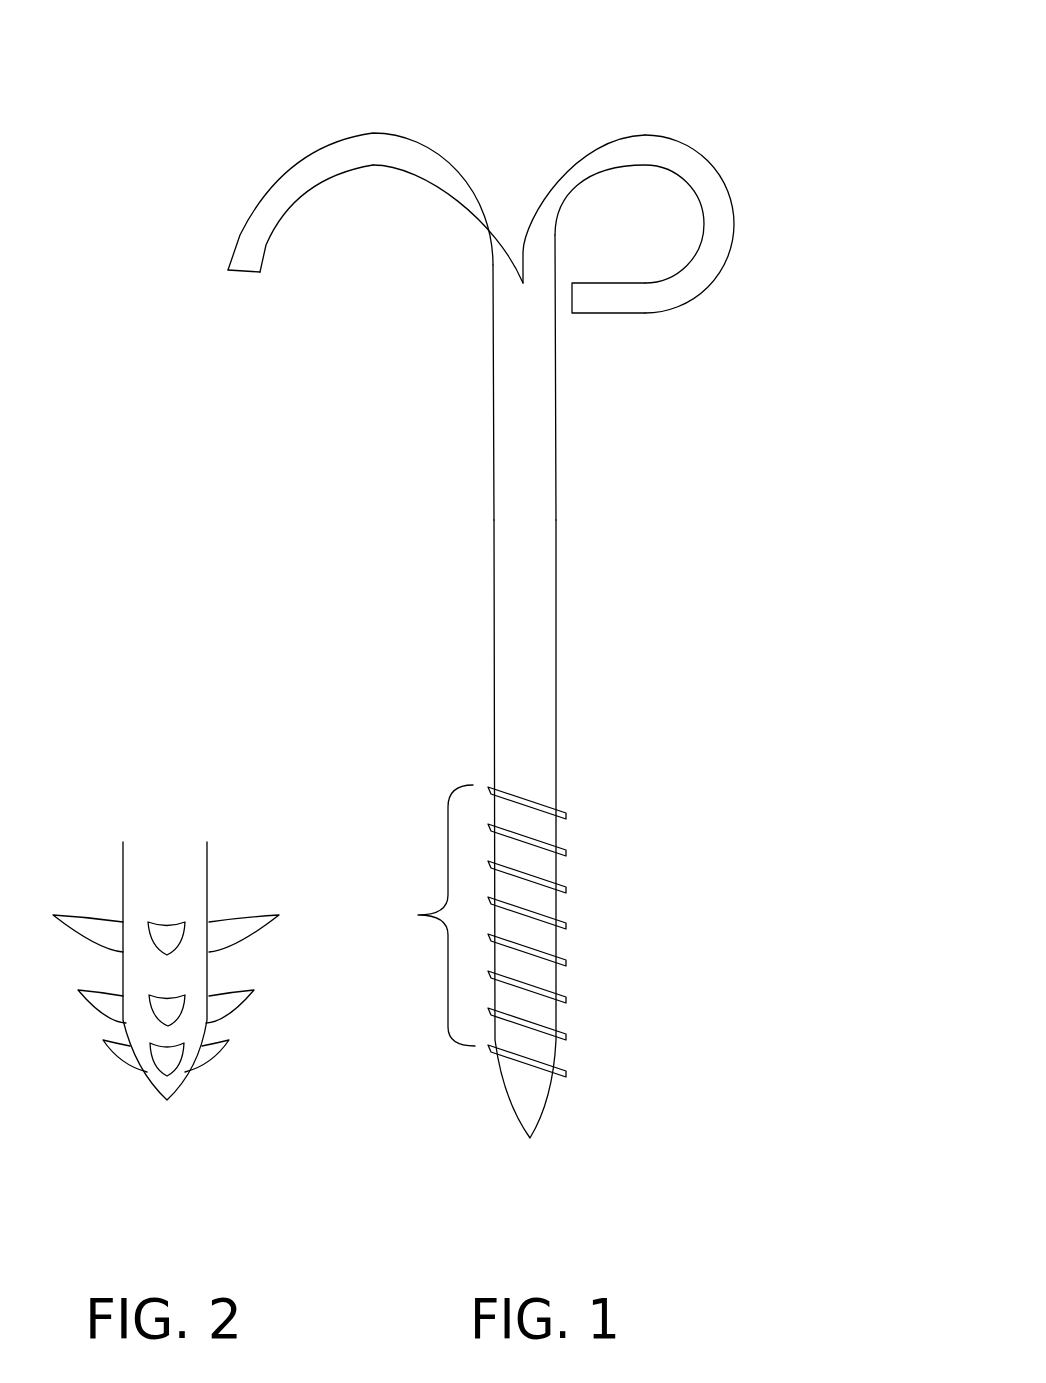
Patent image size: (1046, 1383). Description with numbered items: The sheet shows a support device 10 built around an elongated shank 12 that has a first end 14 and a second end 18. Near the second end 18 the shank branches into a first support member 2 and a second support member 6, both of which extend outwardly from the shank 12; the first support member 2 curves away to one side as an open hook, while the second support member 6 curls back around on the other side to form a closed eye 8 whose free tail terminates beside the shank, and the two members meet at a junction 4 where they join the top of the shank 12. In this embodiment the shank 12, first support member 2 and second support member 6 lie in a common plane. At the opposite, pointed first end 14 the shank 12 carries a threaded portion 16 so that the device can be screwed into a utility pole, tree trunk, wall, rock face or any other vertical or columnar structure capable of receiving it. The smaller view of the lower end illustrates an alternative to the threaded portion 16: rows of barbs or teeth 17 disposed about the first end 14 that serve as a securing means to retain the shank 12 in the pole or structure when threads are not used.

In FIG. 1, the first support member 2 is at (248, 203).
In FIG. 1, the junction of hook portions 4 is at (521, 245).
In FIG. 1, the second support member 6 is at (637, 318).
In FIG. 1, the eye loop of second hook portion 8 is at (638, 237).
In FIG. 1, the support device 10 is at (687, 116).
In FIG. 1, the shank 12 is at (556, 550).
In FIG. 1, the first end 14 is at (563, 945).
In FIG. 1, the threaded portion 16 is at (422, 915).
In FIG. 2, the barbs or teeth 17 is at (188, 1075).
In FIG. 1, the second end 18 is at (494, 328).